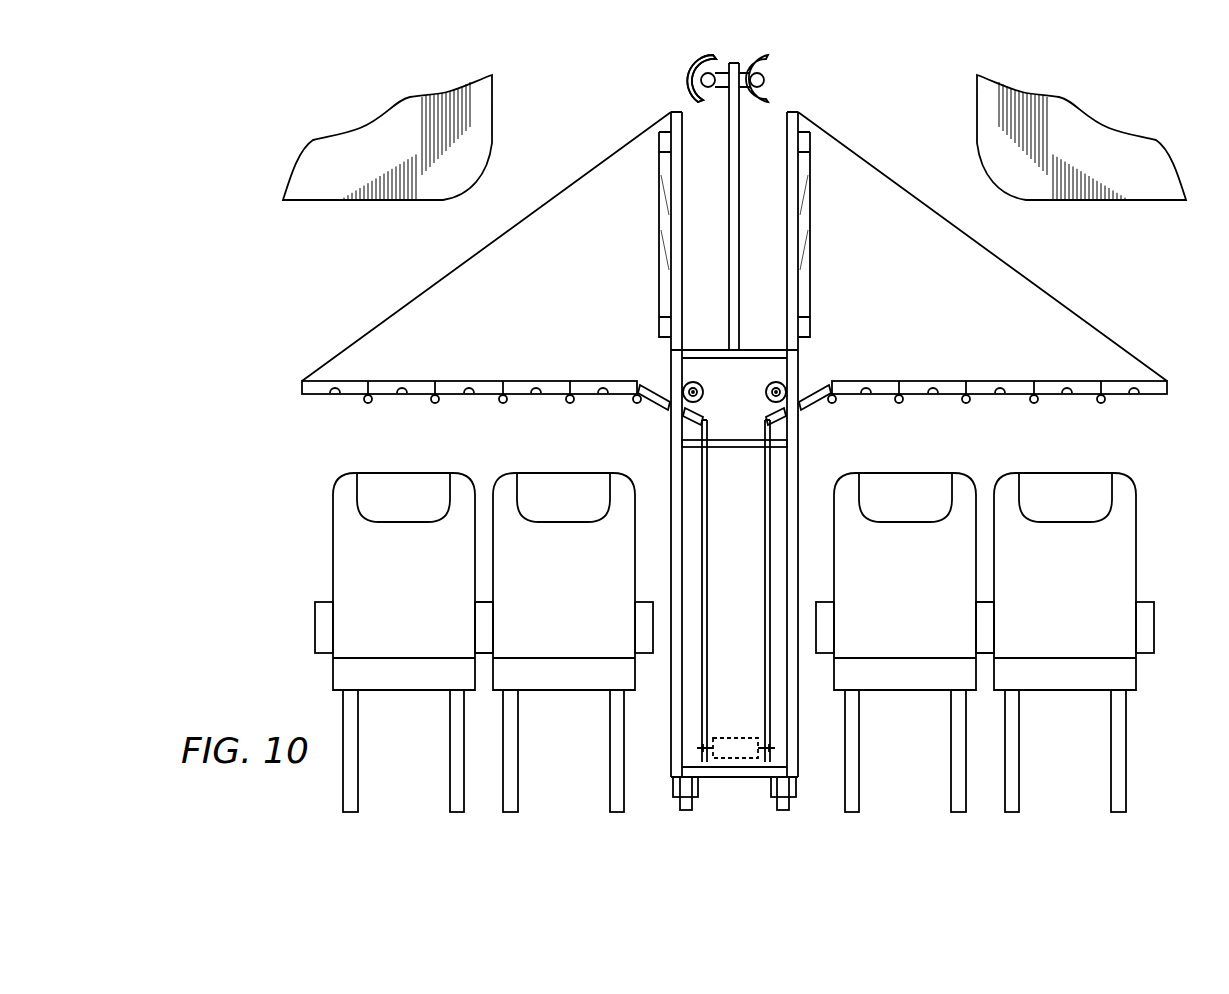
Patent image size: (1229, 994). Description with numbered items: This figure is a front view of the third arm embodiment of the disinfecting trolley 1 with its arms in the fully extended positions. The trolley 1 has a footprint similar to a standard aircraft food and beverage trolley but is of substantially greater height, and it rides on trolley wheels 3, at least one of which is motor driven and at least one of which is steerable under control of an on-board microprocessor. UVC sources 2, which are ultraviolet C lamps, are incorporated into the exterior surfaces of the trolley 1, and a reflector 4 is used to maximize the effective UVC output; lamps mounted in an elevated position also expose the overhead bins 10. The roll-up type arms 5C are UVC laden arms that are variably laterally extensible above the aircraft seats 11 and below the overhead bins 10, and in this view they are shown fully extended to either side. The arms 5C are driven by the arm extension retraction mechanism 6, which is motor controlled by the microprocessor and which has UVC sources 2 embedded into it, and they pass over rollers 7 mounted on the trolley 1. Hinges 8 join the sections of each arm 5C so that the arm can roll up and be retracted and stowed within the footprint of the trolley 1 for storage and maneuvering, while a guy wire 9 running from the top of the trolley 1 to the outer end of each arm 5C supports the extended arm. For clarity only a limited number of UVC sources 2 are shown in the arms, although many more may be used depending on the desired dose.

The trolley 1 is at (810, 776).
The UVC source 2 is at (701, 81).
The trolley wheels 3 is at (688, 801).
The reflector 4 is at (705, 66).
The arm 5C is at (585, 388).
The arm extension retraction mechanism 6 is at (737, 737).
The rollers 7 is at (766, 390).
The hinges 8 is at (503, 403).
The guy wire 9 is at (400, 312).
The overhead bins 10 is at (380, 202).
The aircraft seats 11 is at (362, 552).